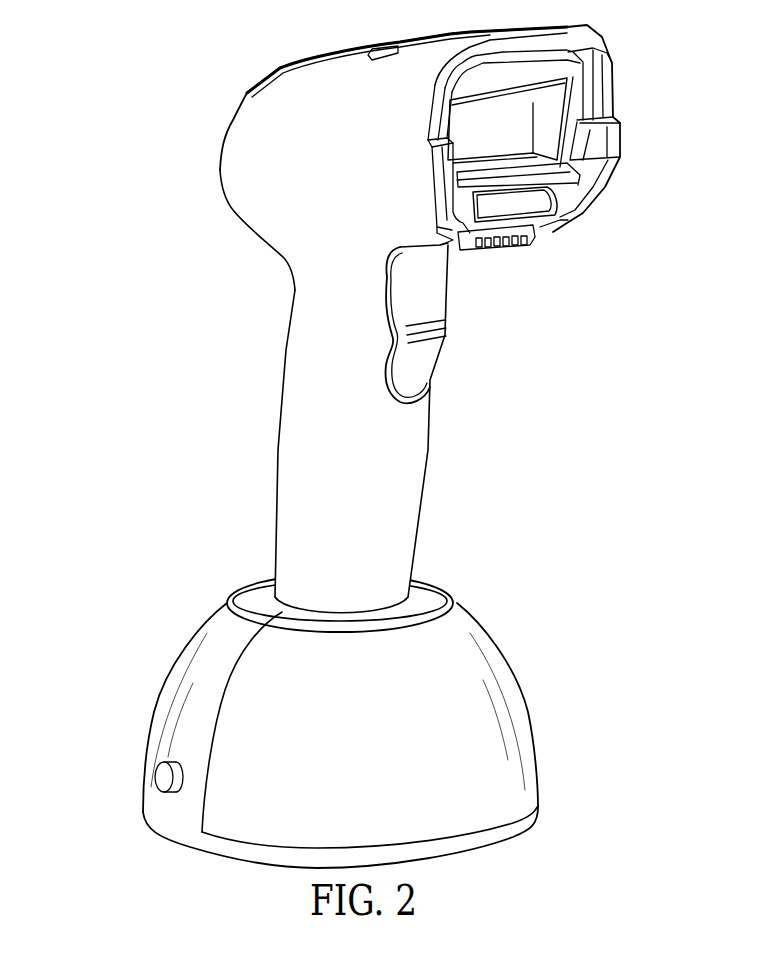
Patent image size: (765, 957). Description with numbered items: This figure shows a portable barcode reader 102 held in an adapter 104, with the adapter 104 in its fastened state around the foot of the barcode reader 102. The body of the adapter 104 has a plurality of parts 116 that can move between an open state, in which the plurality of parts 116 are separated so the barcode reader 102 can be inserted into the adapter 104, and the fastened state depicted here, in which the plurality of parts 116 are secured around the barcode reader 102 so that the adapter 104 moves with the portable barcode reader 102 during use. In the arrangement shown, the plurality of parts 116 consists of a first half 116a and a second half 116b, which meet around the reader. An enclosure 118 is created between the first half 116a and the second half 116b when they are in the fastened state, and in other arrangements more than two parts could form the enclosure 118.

The barcode reader 102 is at (401, 319).
The adapter 104 is at (513, 680).
The plurality of parts 116 is at (280, 596).
The first half 116a is at (433, 590).
The second half 116b is at (242, 596).
The enclosure 118 is at (266, 588).